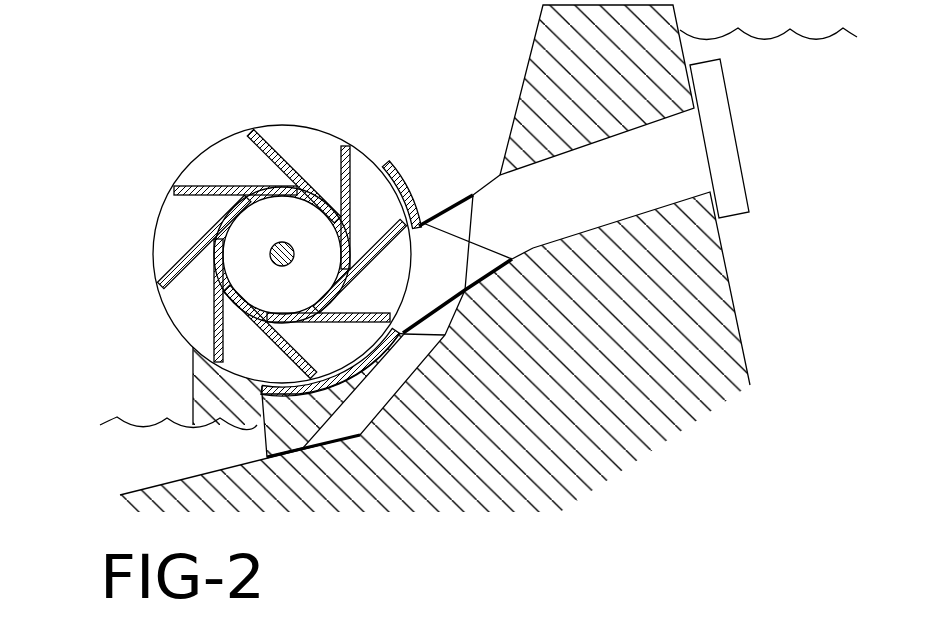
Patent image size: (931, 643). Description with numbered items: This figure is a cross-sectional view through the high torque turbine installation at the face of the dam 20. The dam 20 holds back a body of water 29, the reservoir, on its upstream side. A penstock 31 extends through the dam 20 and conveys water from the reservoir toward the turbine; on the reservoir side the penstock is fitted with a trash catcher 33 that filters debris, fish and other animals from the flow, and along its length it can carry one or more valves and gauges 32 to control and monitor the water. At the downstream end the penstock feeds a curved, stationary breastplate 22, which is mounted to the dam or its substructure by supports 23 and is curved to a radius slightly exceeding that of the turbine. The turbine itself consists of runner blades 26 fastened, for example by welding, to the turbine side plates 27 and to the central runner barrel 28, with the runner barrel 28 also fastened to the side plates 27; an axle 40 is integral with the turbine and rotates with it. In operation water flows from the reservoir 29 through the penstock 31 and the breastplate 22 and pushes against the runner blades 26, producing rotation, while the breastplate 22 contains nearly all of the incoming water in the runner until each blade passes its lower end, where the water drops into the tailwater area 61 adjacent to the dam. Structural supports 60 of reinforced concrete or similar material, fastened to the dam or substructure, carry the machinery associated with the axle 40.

The dam 20 is at (540, 17).
The breastplate 22 is at (393, 158).
The supports 23 is at (267, 443).
The runner blades 26 is at (162, 270).
The turbine side plates 27 is at (234, 137).
The runner barrel 28 is at (218, 245).
The body of water 29 is at (818, 78).
The penstock 31 is at (467, 255).
The valves and gauges 32 is at (468, 266).
The trash catcher 33 is at (749, 192).
The axle 40 is at (272, 249).
The structural supports 60 is at (205, 385).
The tailwater area 61 is at (101, 474).